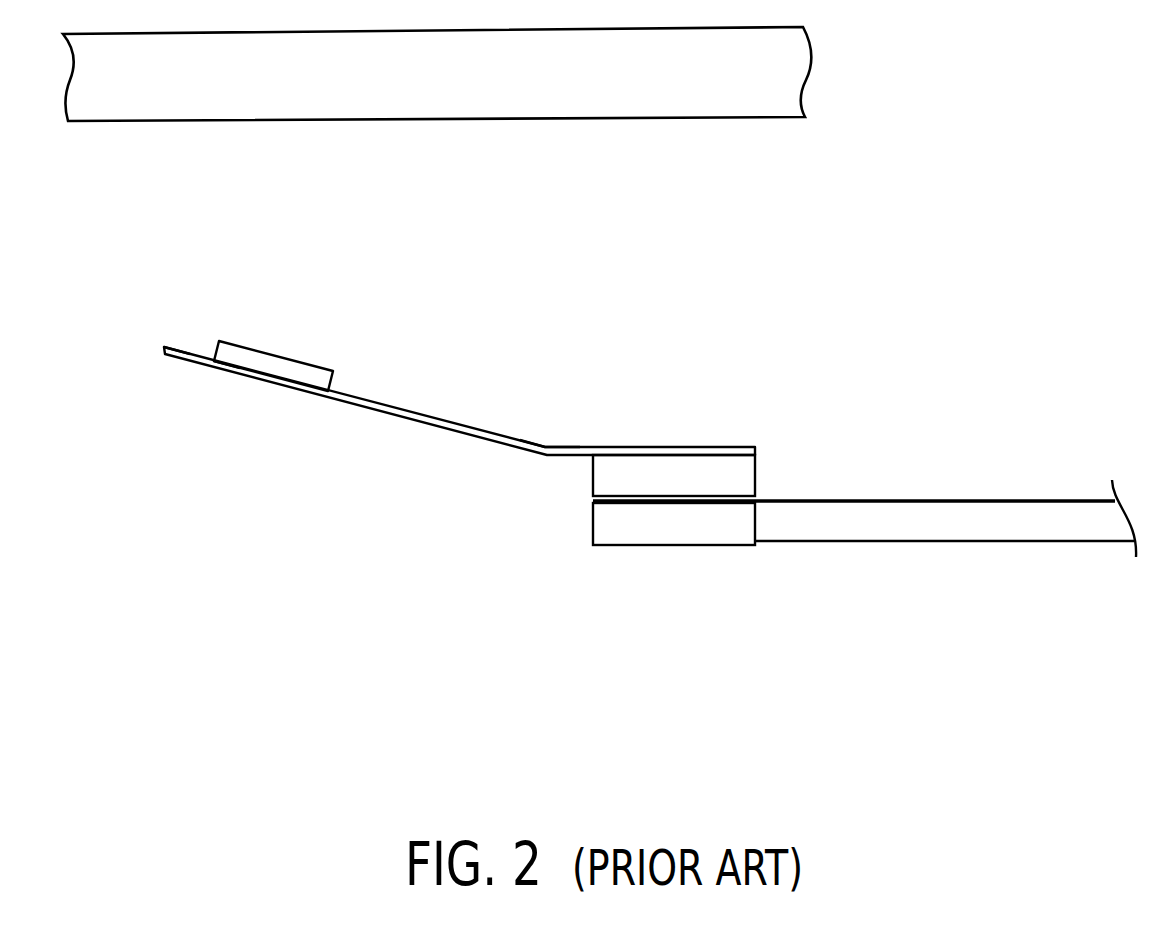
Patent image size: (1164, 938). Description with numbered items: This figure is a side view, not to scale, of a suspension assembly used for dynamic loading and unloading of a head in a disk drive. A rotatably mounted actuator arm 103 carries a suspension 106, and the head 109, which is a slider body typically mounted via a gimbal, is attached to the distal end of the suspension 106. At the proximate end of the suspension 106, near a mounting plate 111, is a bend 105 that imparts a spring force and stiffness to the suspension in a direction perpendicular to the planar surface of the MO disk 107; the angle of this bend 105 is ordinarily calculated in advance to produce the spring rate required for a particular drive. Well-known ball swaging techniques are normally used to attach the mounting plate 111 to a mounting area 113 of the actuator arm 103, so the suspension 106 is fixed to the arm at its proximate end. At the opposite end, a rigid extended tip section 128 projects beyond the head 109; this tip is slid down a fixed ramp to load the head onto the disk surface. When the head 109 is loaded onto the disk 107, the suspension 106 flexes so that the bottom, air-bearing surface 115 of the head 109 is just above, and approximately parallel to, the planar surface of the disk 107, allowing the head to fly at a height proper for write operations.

The actuator arm 103 is at (1018, 541).
The bend 105 is at (545, 447).
The suspension 106 is at (405, 420).
The MO disk 107 is at (670, 117).
The head 109 is at (228, 358).
The mounting plate 111 is at (755, 472).
The mounting area 113 is at (708, 545).
The air-bearing surface 115 is at (293, 355).
The rigid extended tip section 128 is at (188, 350).